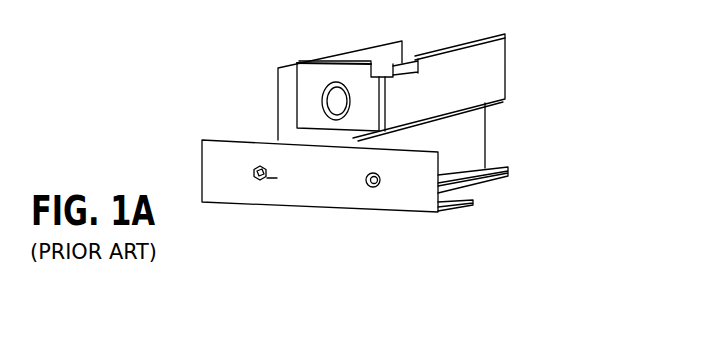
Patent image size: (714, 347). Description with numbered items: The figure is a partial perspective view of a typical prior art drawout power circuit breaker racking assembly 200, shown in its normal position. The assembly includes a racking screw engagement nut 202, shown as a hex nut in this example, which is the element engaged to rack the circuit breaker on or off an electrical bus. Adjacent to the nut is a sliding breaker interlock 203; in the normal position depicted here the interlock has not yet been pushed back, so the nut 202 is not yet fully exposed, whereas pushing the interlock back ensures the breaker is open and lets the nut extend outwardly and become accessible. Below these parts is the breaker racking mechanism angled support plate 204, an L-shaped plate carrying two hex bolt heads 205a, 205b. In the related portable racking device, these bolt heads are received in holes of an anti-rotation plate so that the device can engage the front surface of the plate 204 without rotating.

The drawout power circuit breaker racking assembly 200 is at (161, 104).
The racking screw engagement nut 202 is at (320, 103).
The sliding breaker interlock 203 is at (455, 68).
The breaker racking mechanism angled support plate 204 is at (228, 160).
The bolt head 205a is at (367, 185).
The bolt head 205b is at (260, 180).